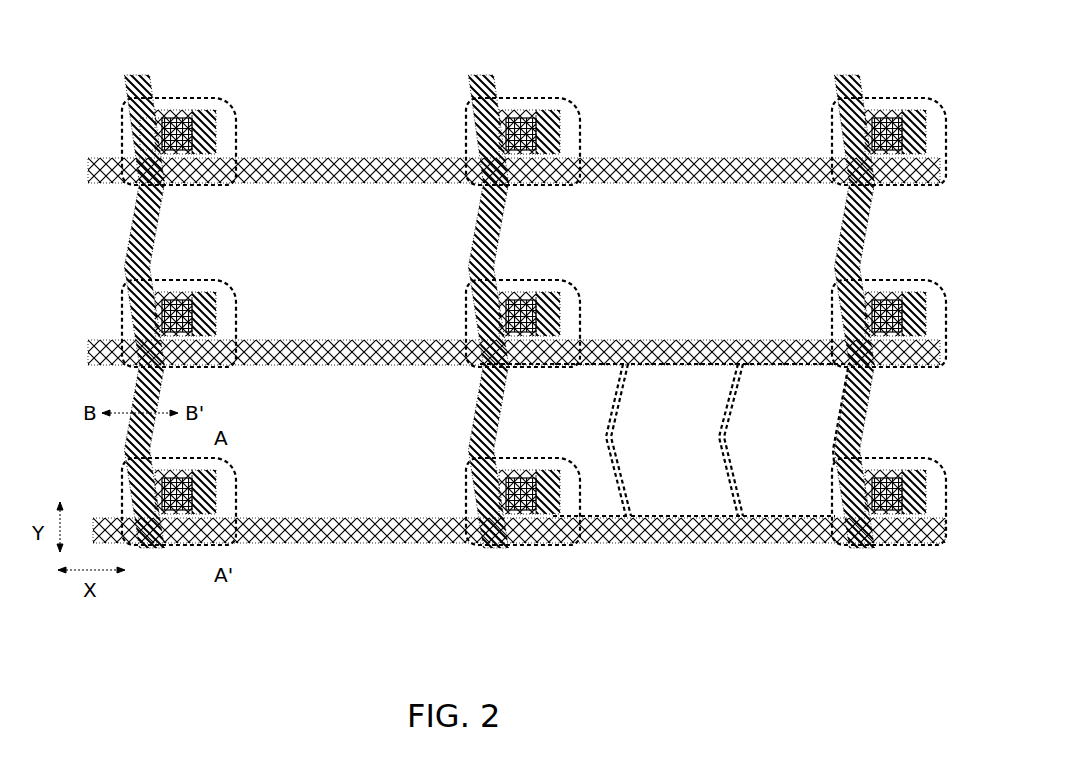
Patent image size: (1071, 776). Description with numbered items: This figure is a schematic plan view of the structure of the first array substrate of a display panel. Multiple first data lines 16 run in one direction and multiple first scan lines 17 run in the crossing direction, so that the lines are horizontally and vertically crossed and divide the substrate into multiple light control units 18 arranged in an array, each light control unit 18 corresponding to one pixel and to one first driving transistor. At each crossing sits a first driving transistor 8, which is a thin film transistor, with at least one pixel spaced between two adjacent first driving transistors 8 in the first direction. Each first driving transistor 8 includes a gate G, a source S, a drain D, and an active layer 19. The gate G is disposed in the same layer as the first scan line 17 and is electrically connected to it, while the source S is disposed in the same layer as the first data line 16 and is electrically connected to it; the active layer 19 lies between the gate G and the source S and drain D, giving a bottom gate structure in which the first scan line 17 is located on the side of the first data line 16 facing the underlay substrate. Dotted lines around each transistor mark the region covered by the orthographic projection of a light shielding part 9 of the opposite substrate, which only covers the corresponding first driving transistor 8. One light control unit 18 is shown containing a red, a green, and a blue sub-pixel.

The first data line 16 is at (150, 93).
The first scan line 17 is at (257, 158).
The light control unit 18 is at (310, 498).
The active layer 19 is at (161, 124).
The first driving transistor 8 is at (224, 114).
The light shielding part 9 is at (555, 548).
The gate G is at (176, 113).
The drain D is at (213, 120).
The source S is at (128, 134).